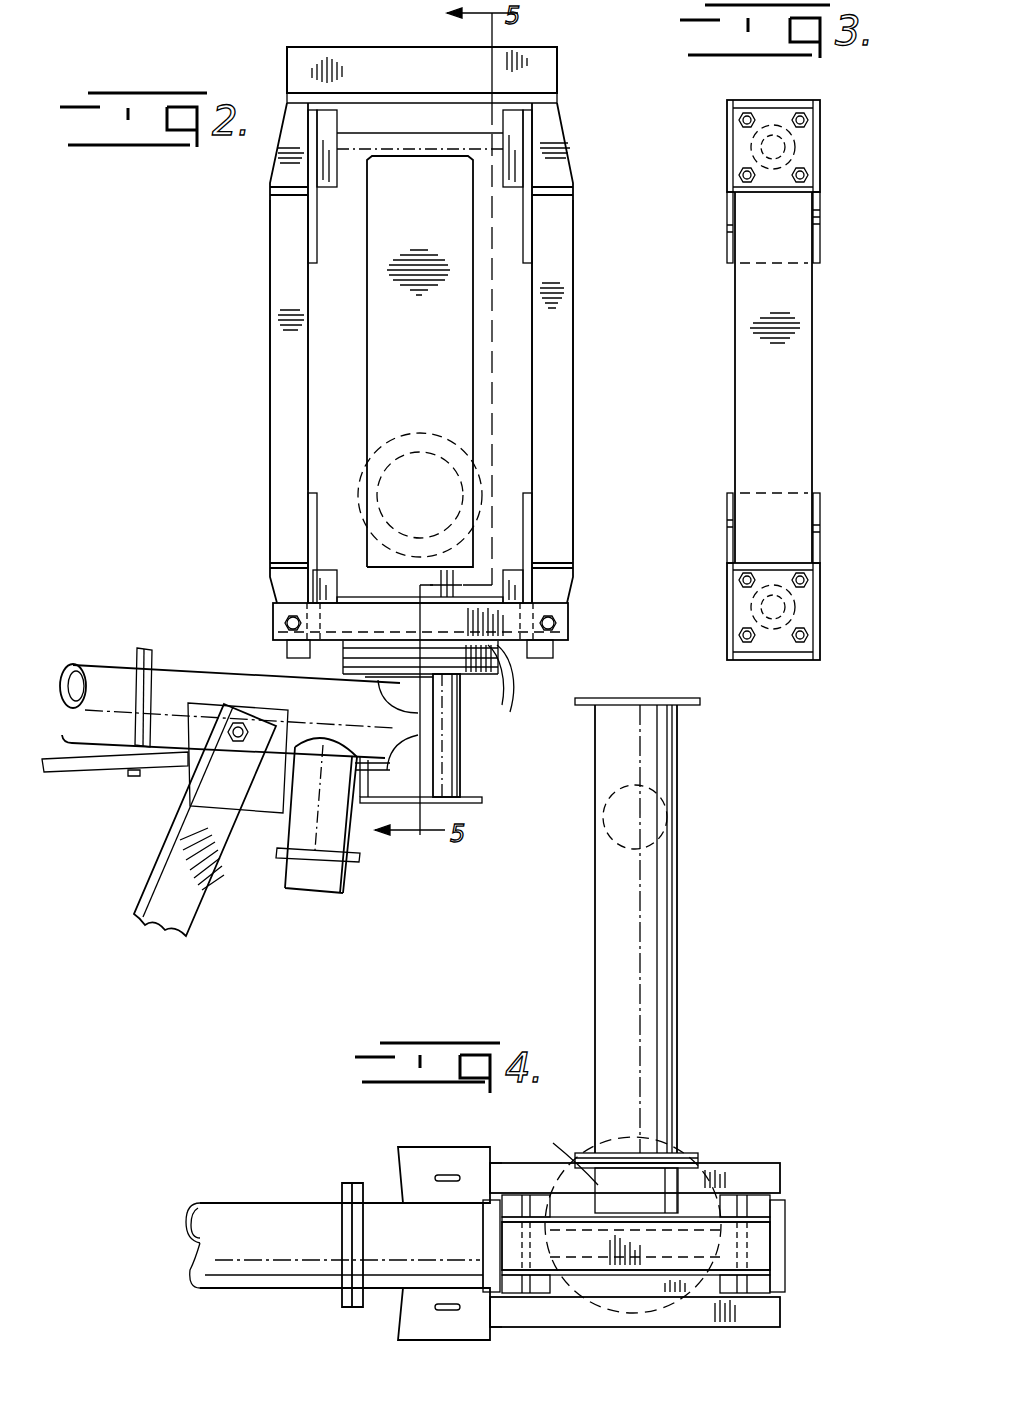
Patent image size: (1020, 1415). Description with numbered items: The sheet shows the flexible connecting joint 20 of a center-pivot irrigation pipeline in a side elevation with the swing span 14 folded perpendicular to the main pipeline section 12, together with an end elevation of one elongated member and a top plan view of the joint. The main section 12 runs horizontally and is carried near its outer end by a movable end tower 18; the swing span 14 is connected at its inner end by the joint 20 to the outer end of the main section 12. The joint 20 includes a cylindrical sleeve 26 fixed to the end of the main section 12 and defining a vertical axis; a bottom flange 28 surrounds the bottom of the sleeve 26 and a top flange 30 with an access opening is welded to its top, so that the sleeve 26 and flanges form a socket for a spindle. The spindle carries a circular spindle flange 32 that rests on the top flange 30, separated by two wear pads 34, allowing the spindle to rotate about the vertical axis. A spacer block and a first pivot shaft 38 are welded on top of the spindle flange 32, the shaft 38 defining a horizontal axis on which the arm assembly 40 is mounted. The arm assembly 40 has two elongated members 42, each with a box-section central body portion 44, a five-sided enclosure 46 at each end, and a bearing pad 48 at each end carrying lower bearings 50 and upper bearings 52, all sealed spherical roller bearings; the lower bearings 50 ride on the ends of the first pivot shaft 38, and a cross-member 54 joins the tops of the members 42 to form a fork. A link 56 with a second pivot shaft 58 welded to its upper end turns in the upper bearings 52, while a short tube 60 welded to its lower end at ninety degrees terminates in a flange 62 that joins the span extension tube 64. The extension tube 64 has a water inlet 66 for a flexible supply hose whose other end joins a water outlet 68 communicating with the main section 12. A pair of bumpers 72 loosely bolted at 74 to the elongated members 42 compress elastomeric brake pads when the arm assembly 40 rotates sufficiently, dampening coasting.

In FIG. 2, the main pipeline section 12 is at (100, 662).
In FIG. 4, the main pipeline section 12 is at (260, 1205).
In FIG. 2, the swing span 14 is at (436, 462).
In FIG. 4, the swing span 14 is at (684, 908).
In FIG. 2, the movable end tower 18 is at (150, 887).
In FIG. 4, the movable end tower 18 is at (410, 1147).
In FIG. 2, the flexible connecting joint 20 is at (262, 290).
In FIG. 4, the flexible connecting joint 20 is at (699, 1110).
In FIG. 2, the cylindrical sleeve 26 is at (462, 772).
In FIG. 2, the bottom flange 28 is at (482, 800).
In FIG. 2, the top flange 30 is at (462, 712).
In FIG. 2, the spindle flange 32 is at (505, 665).
In FIG. 4, the spindle flange 32 is at (690, 1180).
In FIG. 2, the wear pads 34 is at (503, 688).
In FIG. 2, the first pivot shaft 38 is at (362, 595).
In FIG. 2, the arm assembly 40 is at (580, 397).
In FIG. 2, the elongated members 42 is at (275, 325).
In FIG. 3, the elongated members 42 is at (818, 356).
In FIG. 3, the central body portion 44 is at (812, 418).
In FIG. 2, the five-sided enclosure 46 is at (275, 165).
In FIG. 3, the five-sided enclosure 46 is at (825, 145).
In FIG. 4, the five-sided enclosure 46 is at (780, 1272).
In FIG. 2, the bearing pad 48 is at (317, 245).
In FIG. 3, the bearing pad 48 is at (820, 237).
In FIG. 4, the bearing pad 48 is at (733, 1205).
In FIG. 2, the lower bearings 50 is at (520, 570).
In FIG. 3, the lower bearings 50 is at (740, 602).
In FIG. 2, the upper bearings 52 is at (335, 128).
In FIG. 3, the upper bearings 52 is at (740, 153).
In FIG. 4, the upper bearings 52 is at (542, 1210).
In FIG. 2, the cross-member 54 is at (560, 83).
In FIG. 4, the cross-member 54 is at (760, 1248).
In FIG. 2, the link 56 is at (380, 323).
In FIG. 2, the second pivot shaft 58 is at (412, 130).
In FIG. 4, the second pivot shaft 58 is at (636, 1190).
In FIG. 4, the short tube 60 is at (561, 1156).
In FIG. 2, the flange 62 is at (365, 478).
In FIG. 4, the flange 62 is at (588, 1180).
In FIG. 4, the span extension tube 64 is at (670, 970).
In FIG. 2, the water inlet 66 is at (463, 580).
In FIG. 4, the water inlet 66 is at (612, 840).
In FIG. 2, the water outlet 68 is at (325, 895).
In FIG. 2, the bumpers 72 is at (570, 615).
In FIG. 4, the bumpers 72 is at (780, 1178).
In FIG. 2, the bolts 74 is at (287, 623).